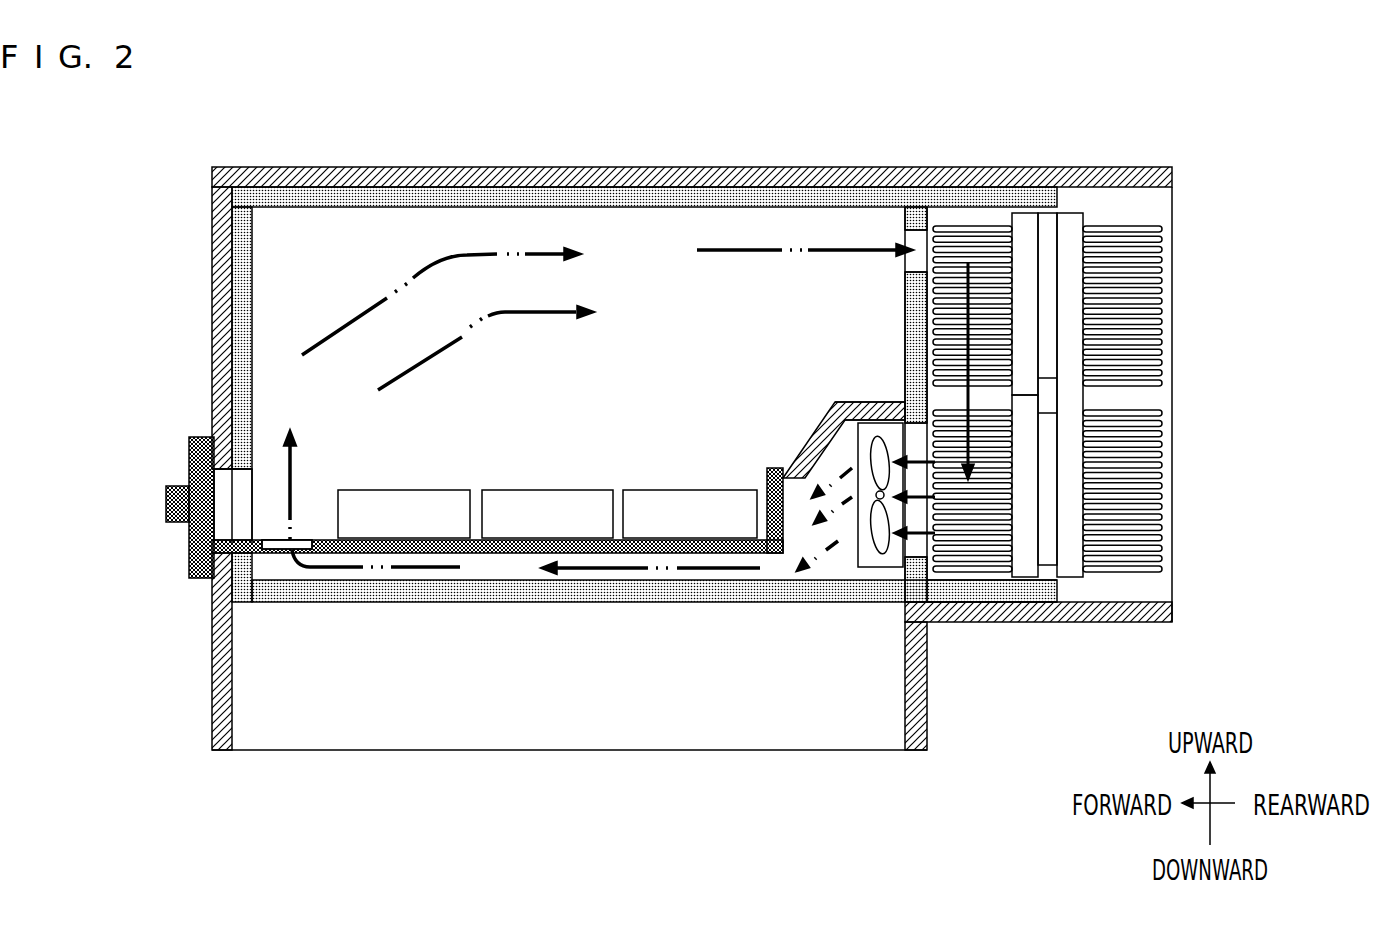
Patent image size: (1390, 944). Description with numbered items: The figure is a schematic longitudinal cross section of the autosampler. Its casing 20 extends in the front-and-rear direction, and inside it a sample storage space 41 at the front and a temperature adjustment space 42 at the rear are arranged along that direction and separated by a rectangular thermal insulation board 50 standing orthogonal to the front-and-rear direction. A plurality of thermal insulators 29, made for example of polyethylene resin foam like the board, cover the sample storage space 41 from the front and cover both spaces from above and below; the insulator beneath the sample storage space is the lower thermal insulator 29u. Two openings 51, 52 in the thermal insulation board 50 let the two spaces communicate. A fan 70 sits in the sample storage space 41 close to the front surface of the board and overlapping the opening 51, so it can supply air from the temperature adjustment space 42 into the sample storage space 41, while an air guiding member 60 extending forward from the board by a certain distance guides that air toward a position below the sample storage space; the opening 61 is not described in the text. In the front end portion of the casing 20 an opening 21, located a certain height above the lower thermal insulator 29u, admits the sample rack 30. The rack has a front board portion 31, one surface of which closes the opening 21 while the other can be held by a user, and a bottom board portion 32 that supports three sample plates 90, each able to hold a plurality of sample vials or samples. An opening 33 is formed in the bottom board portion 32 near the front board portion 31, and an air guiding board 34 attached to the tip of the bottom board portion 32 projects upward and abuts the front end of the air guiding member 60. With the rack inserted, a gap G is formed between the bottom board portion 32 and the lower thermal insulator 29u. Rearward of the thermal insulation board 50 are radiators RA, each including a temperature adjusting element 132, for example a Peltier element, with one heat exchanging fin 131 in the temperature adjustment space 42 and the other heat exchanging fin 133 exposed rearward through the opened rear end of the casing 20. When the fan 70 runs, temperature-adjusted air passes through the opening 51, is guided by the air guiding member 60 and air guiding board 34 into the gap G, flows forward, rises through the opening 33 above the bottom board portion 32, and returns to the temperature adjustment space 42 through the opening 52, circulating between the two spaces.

The casing 20 is at (212, 236).
The opening 21 is at (221, 488).
The thermal insulator 29 is at (238, 311).
The lower thermal insulator 29u is at (648, 592).
The sample rack 30 is at (426, 609).
The front board portion 31 is at (192, 571).
The bottom board portion 32 is at (365, 553).
The opening 33 is at (303, 540).
The air guiding board 34 is at (775, 470).
The sample storage space 41 is at (593, 421).
The temperature adjustment space 42 is at (946, 582).
The thermal insulation board 50 is at (1068, 439).
The opening 51 is at (905, 553).
The opening 52 is at (913, 262).
The air guiding member 60 is at (802, 445).
The duct opening 61 is at (786, 567).
The fan 70 is at (822, 423).
The sample plate 90 is at (420, 527).
The heat exchanging fin 131 is at (1025, 262).
The temperature adjusting element 132 is at (1045, 308).
The heat exchanging fin 133 is at (1068, 360).
The gap G is at (501, 570).
The radiator RA is at (1280, 196).